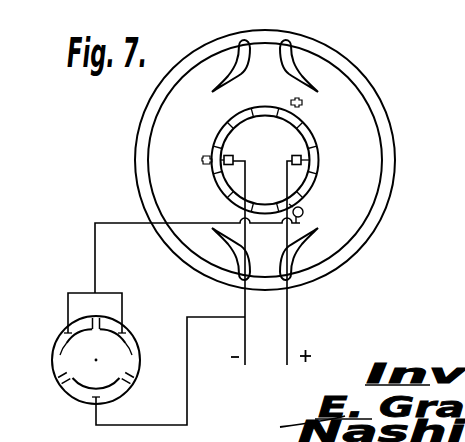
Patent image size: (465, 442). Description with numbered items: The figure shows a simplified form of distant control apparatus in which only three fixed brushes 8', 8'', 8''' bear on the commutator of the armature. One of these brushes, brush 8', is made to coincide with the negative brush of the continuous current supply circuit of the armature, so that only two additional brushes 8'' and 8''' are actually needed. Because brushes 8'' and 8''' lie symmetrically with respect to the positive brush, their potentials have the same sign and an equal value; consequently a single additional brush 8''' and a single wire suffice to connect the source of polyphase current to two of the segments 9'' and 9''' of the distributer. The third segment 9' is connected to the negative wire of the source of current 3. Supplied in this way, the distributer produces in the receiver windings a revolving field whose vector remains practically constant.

The source of current 3 is at (266, 262).
The fixed brush 8' is at (155, 165).
The fixed brush 8'' is at (359, 82).
The fixed brush 8''' is at (272, 248).
The segment of the distributer 9' is at (85, 372).
The segment of the distributer 9'' is at (41, 338).
The segment of the distributer 9''' is at (154, 337).